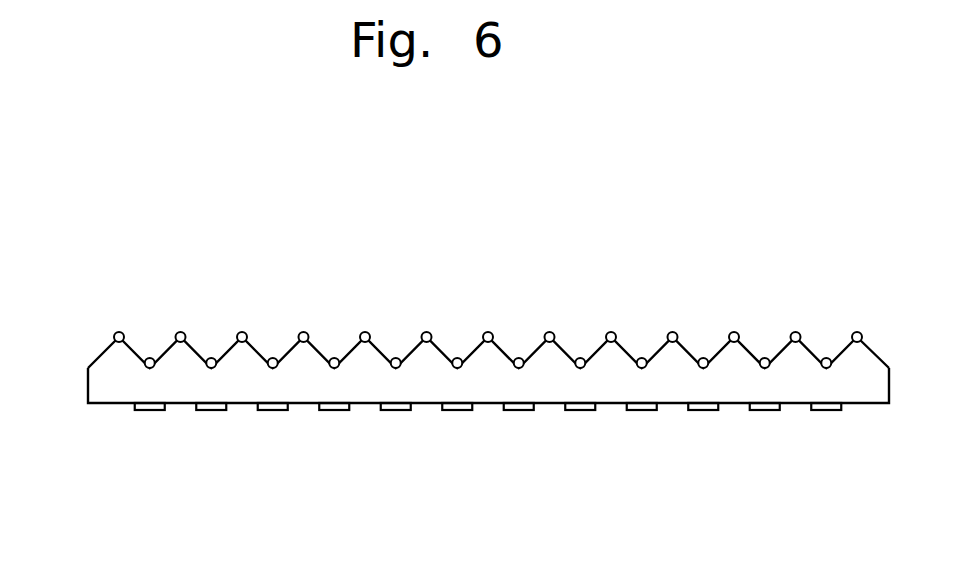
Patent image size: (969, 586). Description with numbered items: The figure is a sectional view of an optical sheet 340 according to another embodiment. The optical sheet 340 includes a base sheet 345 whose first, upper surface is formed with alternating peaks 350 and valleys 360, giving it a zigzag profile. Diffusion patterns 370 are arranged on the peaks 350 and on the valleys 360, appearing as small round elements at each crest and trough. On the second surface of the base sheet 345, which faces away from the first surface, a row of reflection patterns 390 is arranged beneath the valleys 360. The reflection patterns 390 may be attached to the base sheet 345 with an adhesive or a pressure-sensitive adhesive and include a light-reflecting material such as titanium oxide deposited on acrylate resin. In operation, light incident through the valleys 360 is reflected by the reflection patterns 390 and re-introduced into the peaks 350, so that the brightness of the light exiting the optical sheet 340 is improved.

The optical sheet 340 is at (450, 348).
The base sheet 345 is at (102, 386).
The peaks 350 is at (100, 353).
The valleys 360 is at (153, 342).
The diffusion patterns 370 is at (181, 331).
The reflection patterns 390 is at (153, 412).